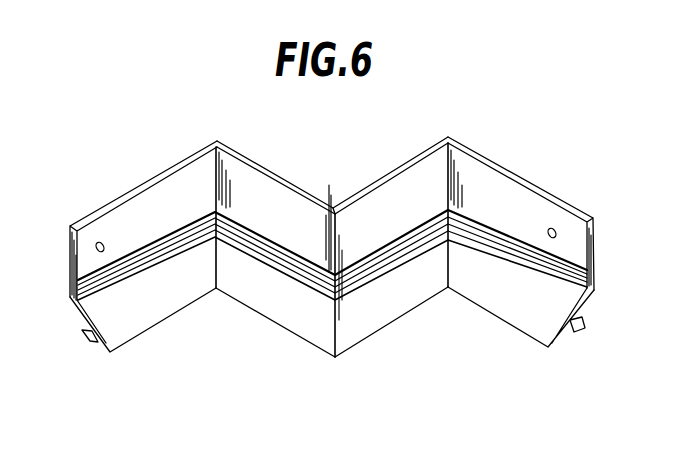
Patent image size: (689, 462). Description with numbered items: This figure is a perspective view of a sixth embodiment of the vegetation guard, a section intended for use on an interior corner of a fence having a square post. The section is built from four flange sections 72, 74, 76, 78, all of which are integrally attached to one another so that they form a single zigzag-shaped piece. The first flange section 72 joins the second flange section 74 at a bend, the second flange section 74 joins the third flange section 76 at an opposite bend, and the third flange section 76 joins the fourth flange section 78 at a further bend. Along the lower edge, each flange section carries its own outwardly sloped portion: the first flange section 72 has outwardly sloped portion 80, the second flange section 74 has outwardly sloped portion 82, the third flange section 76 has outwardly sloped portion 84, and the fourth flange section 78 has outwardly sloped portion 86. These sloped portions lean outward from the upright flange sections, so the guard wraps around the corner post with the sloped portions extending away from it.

The flange section 72 is at (112, 202).
The flange section 74 is at (266, 166).
The flange section 76 is at (425, 146).
The flange section 78 is at (489, 155).
The outwardly sloped portion 80 is at (138, 320).
The outwardly sloped portion 82 is at (275, 305).
The outwardly sloped portion 84 is at (381, 314).
The outwardly sloped portion 86 is at (515, 300).